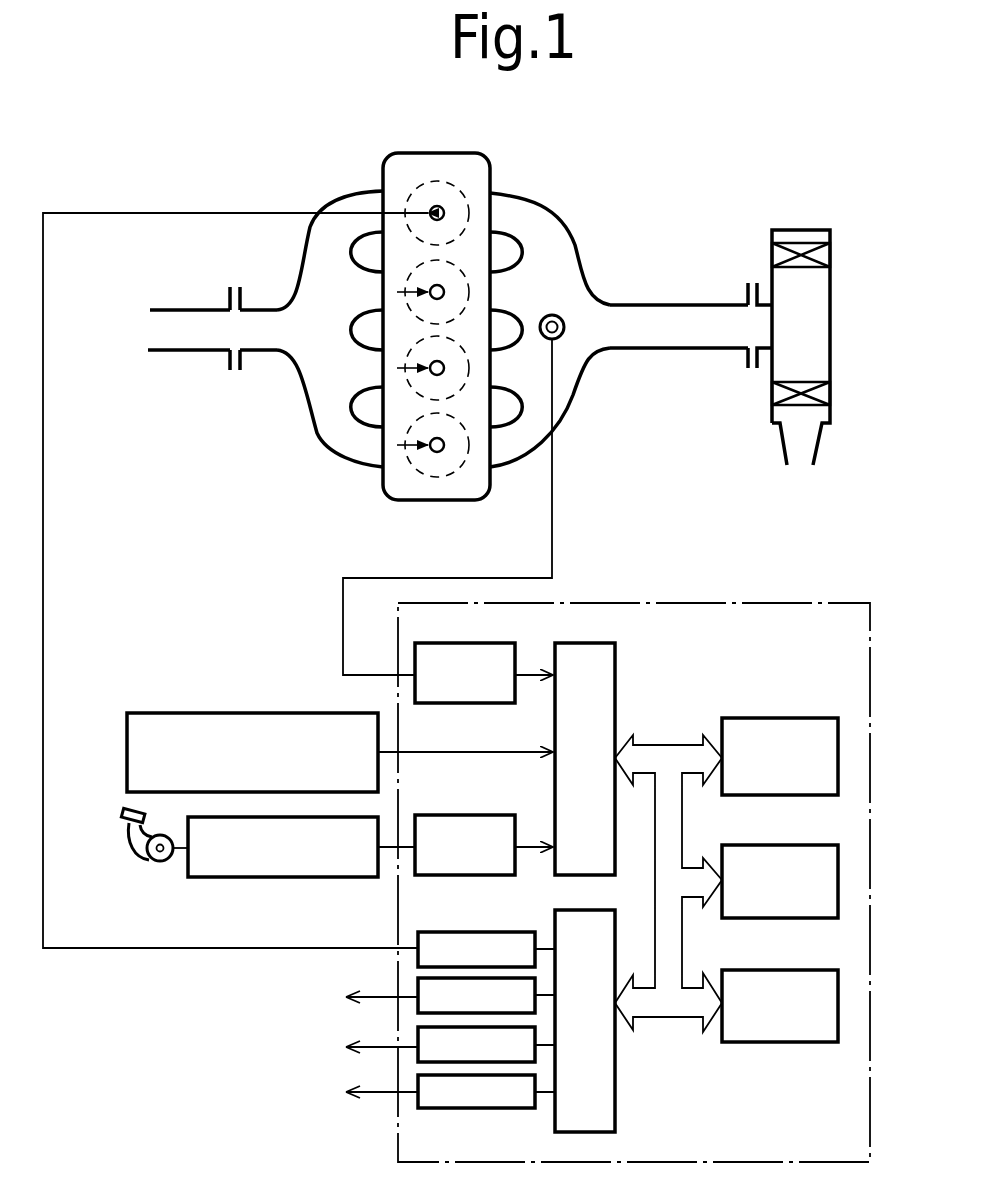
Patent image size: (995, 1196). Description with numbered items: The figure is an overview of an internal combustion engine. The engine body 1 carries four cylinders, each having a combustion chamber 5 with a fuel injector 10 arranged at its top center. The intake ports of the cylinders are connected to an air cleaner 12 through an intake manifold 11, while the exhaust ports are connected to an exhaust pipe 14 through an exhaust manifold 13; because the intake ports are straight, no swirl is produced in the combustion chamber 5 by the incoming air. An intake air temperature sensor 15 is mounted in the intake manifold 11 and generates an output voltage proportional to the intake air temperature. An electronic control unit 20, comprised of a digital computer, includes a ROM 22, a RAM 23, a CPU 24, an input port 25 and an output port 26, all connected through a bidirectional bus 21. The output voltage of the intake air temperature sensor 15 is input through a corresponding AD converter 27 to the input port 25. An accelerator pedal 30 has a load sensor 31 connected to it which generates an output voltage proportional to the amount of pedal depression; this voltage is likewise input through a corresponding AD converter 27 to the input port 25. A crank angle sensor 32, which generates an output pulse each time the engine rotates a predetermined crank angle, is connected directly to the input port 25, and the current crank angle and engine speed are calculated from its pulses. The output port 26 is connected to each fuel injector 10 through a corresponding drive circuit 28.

The engine body 1 is at (368, 500).
The combustion chamber 5 is at (458, 190).
The fuel injector 10 is at (437, 206).
The intake manifold 11 is at (557, 400).
The air cleaner 12 is at (795, 235).
The exhaust manifold 13 is at (322, 410).
The exhaust pipe 14 is at (165, 340).
The intake air temperature sensor 15 is at (560, 315).
The electronic control unit 20 is at (802, 596).
The bidirectional bus 21 is at (662, 743).
The ROM 22 is at (815, 717).
The RAM 23 is at (788, 845).
The CPU 24 is at (783, 968).
The input port 25 is at (617, 653).
The output port 26 is at (615, 1110).
The AD converter 27 is at (472, 643).
The drive circuit 28 is at (416, 990).
The accelerator pedal 30 is at (140, 853).
The load sensor 31 is at (242, 878).
The crank angle sensor 32 is at (155, 713).